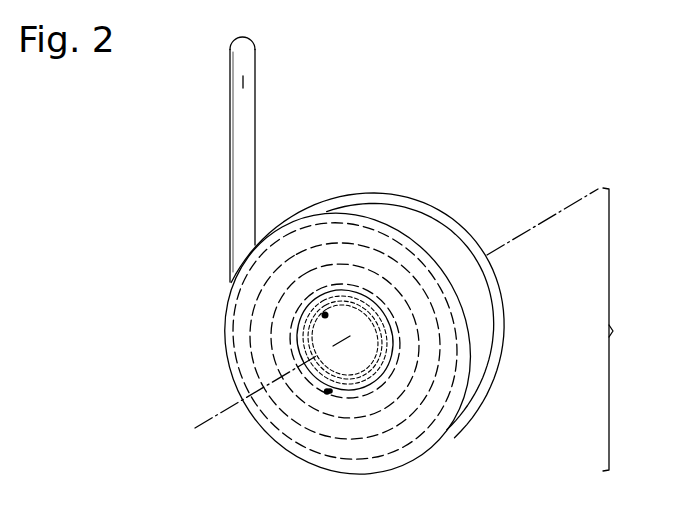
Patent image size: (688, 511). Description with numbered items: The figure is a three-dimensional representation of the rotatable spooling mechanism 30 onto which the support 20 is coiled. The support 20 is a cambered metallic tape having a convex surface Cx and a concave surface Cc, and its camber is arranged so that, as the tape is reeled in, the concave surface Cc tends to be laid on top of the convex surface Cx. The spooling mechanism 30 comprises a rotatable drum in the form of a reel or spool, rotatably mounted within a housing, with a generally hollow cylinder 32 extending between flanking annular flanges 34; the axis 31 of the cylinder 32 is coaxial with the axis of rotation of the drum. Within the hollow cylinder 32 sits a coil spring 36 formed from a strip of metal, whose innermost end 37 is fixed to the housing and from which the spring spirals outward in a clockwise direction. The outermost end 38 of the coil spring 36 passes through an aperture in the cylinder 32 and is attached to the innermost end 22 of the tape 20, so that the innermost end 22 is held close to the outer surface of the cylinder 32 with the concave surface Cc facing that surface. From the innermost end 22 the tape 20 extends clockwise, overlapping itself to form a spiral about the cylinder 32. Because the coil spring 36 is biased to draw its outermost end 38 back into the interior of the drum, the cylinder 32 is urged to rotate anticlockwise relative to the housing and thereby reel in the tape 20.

The support 20 is at (238, 136).
The convex surface Cx is at (240, 38).
The concave surface Cc is at (243, 82).
The rotatable spooling mechanism 30 is at (412, 325).
The axis 31 is at (552, 218).
The hollow cylinder 32 is at (387, 372).
The annular flanges 34 is at (283, 225).
The coil spring 36 is at (376, 300).
The innermost end 37 is at (326, 314).
The innermost end 22 is at (325, 392).
The outermost end 38 is at (329, 393).